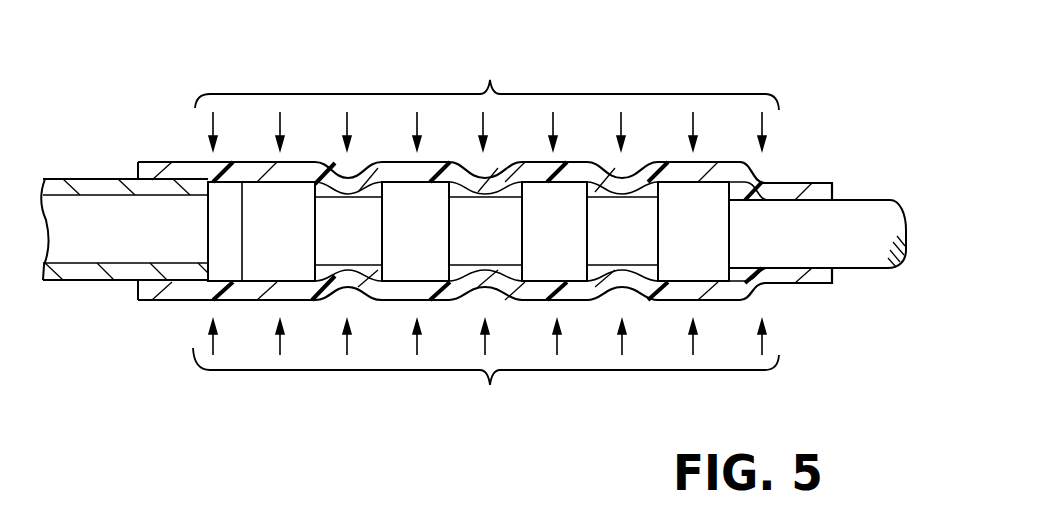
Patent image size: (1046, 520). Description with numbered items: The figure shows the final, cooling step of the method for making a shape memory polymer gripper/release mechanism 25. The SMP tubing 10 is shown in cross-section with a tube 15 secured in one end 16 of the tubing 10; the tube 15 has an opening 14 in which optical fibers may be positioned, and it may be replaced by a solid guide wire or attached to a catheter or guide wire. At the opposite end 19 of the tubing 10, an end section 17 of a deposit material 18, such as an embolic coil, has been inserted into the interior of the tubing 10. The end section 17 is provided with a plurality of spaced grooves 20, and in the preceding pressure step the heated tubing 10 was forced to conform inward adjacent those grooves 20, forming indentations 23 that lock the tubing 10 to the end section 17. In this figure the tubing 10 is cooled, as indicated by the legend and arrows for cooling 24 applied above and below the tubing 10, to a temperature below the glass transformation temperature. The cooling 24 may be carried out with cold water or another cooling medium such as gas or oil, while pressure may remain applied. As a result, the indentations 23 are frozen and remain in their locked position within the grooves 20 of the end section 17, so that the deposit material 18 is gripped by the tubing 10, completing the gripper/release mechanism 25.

The SMP tubing 10 is at (162, 162).
The opening 14 is at (137, 248).
The tube 15 is at (82, 282).
The end of tubing 16 is at (138, 292).
The end section 17 is at (420, 250).
The deposit material 18 is at (853, 200).
The end of tubing 19 is at (832, 275).
The grooves 20 is at (603, 270).
The indentations 23 is at (625, 288).
The cooling 24 is at (486, 233).
The SMP gripper/release mechanism 25 is at (173, 360).